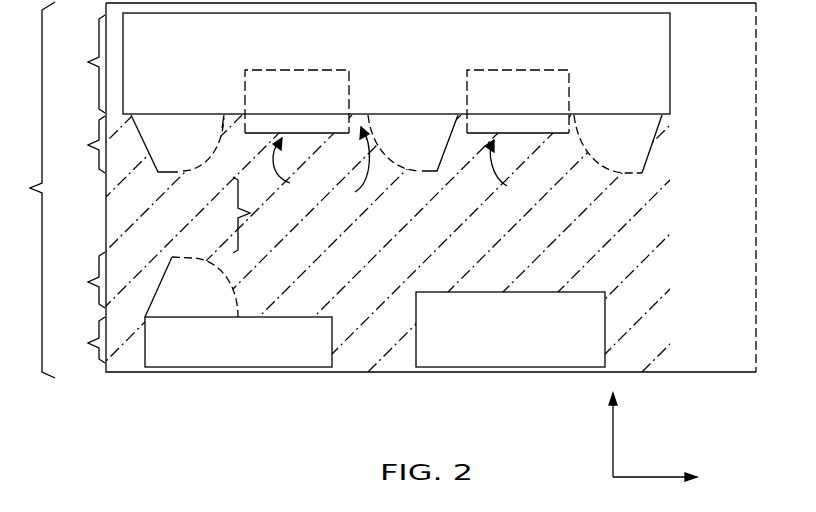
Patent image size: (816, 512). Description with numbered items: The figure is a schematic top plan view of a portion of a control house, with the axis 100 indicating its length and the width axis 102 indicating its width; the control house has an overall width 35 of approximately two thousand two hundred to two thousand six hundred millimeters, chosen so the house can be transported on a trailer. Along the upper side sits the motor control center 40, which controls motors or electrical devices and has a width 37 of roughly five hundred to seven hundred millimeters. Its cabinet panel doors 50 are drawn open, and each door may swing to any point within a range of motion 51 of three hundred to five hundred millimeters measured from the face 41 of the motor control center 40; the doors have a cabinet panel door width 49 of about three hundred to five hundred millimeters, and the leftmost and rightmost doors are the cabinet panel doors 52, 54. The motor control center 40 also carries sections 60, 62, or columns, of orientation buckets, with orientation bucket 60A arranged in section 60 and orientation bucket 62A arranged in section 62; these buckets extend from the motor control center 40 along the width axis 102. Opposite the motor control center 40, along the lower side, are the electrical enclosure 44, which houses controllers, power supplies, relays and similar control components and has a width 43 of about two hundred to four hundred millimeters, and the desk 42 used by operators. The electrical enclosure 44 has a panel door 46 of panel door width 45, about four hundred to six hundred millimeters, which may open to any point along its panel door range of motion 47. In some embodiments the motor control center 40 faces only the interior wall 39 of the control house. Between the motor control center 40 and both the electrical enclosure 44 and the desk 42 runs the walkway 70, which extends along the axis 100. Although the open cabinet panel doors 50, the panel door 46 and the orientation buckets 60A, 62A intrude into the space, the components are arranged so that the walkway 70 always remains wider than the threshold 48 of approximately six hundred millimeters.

The width 35 is at (29, 190).
The width 37 is at (82, 64).
The interior wall 39 is at (343, 372).
The motor control center 40 is at (415, 77).
The face 41 is at (353, 166).
The desk 42 is at (524, 352).
The width 43 is at (82, 340).
The electrical enclosure 44 is at (247, 357).
The panel door width 45 is at (81, 280).
The panel door 46 is at (156, 286).
The panel door range of motion 47 is at (229, 288).
The threshold 48 is at (255, 215).
The cabinet panel door width 49 is at (82, 144).
The cabinet panel doors 50 is at (447, 145).
The range of motion 51 is at (207, 155).
The cabinet panel door 52 is at (145, 148).
The cabinet panel door 54 is at (653, 145).
The section 60 is at (295, 168).
The orientation bucket 60A is at (315, 107).
The section 62 is at (510, 170).
The orientation bucket 62A is at (539, 107).
The walkway 70 is at (424, 256).
The axis 100 is at (648, 478).
The width axis 102 is at (610, 443).